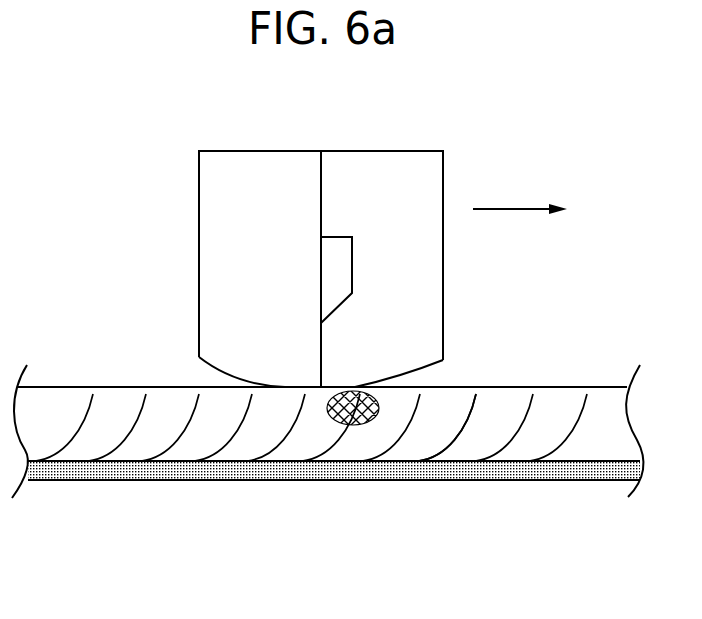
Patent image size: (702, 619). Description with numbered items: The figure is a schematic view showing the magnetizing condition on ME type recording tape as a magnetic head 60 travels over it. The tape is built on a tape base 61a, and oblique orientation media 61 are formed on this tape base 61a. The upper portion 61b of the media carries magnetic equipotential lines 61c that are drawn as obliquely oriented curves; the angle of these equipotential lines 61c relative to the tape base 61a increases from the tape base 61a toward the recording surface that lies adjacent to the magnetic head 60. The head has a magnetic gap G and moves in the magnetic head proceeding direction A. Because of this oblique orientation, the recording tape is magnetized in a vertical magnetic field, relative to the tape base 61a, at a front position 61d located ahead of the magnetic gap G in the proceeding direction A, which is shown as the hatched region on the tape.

The cleaning head / tool 60 is at (263, 174).
The oblique orientation media 61 is at (327, 415).
The tape base 61a is at (103, 481).
The fibrous layer of cleaning sheet 61b is at (148, 408).
The equipotential lines 61c is at (463, 437).
The front position 61d is at (360, 426).
The magnetic gap G is at (321, 370).
The magnetic head proceeding direction A is at (535, 209).